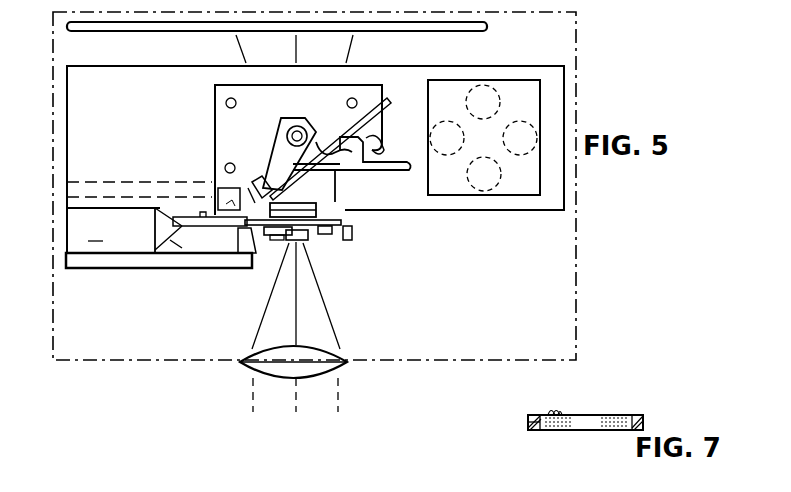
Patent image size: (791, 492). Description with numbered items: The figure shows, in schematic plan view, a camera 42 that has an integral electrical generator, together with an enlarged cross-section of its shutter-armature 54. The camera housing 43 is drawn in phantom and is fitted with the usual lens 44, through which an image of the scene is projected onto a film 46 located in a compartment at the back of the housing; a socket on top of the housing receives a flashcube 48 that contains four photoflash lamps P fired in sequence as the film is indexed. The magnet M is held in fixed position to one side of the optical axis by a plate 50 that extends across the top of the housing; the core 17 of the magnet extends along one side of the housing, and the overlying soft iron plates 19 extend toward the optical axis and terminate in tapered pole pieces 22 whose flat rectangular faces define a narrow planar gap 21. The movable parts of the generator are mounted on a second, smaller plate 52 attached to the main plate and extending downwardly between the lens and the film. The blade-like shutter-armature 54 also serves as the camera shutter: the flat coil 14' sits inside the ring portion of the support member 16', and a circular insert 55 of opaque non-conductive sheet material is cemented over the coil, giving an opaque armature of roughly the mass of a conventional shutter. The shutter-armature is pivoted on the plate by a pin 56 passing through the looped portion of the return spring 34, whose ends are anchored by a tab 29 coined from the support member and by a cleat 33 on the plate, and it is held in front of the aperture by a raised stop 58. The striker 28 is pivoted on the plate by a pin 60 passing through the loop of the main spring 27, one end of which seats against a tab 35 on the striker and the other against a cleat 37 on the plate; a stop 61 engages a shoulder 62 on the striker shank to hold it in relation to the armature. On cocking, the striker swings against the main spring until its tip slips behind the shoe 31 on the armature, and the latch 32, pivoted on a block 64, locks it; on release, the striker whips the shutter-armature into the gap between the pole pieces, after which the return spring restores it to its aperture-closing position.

In FIG. 5, the camera 42 is at (24, 146).
In FIG. 5, the camera housing 43 is at (563, 245).
In FIG. 5, the film 46 is at (486, 31).
In FIG. 5, the flashcube 48 is at (510, 96).
In FIG. 5, the plate 50 is at (408, 212).
In FIG. 5, the plate 52 is at (215, 119).
In FIG. 5, the cleat 37 is at (384, 100).
In FIG. 5, the pin 60 is at (288, 131).
In FIG. 5, the main spring 27 is at (336, 126).
In FIG. 5, the stop 61 is at (363, 152).
In FIG. 5, the shoulder 62 is at (368, 137).
In FIG. 5, the striker 28 is at (363, 176).
In FIG. 5, the tab 35 is at (275, 186).
In FIG. 5, the latch 32 is at (255, 198).
In FIG. 5, the block 64 is at (218, 190).
In FIG. 5, the raised stop 58 is at (326, 215).
In FIG. 5, the soft iron plates 19 is at (98, 180).
In FIG. 5, the core 17 is at (72, 227).
In FIG. 5, the pole pieces 22 is at (155, 240).
In FIG. 5, the gap 21 is at (203, 226).
In FIG. 5, the shutter-armature 54 is at (246, 224).
In FIG. 7, the shutter-armature 54 is at (672, 418).
In FIG. 5, the tab 29 is at (267, 236).
In FIG. 5, the shoe 31 is at (305, 240).
In FIG. 5, the return spring 34 is at (330, 234).
In FIG. 5, the cleat 33 is at (348, 224).
In FIG. 5, the pin 56 is at (296, 327).
In FIG. 5, the lens 44 is at (312, 372).
In FIG. 7, the flat coil 14' is at (557, 401).
In FIG. 7, the support member 16' is at (517, 421).
In FIG. 7, the circular insert 55 is at (590, 431).